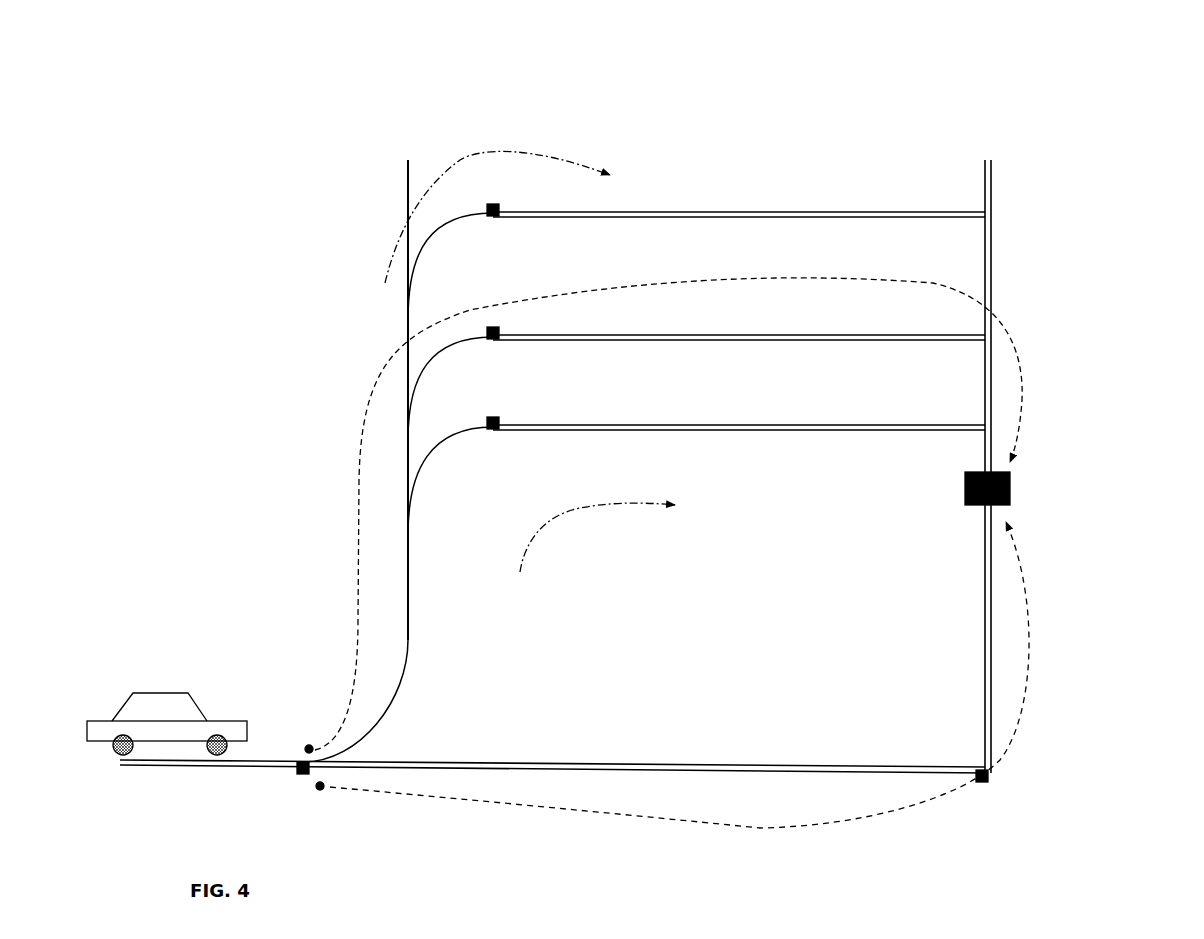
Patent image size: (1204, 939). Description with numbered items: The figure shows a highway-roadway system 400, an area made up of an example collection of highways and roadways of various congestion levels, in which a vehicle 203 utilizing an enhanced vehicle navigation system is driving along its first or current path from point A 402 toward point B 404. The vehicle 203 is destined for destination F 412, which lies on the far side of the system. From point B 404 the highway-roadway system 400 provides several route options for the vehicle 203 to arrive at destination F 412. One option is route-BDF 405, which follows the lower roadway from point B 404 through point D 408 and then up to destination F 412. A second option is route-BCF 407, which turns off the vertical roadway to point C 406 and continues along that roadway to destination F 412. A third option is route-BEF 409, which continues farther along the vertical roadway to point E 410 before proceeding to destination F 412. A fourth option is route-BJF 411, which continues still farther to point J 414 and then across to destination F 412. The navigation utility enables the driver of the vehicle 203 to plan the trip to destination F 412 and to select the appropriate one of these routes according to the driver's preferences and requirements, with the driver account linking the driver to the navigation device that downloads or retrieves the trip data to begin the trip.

The highway-roadway system 400 is at (595, 388).
The vehicle 203 is at (147, 677).
The location A 402 is at (149, 836).
The intersection B 404 is at (321, 846).
The route-BDF 405 is at (684, 830).
The intersection C 406 is at (509, 502).
The route-BCF 407 is at (628, 581).
The intersection D 408 is at (1011, 867).
The route-BEF 409 is at (1013, 316).
The intersection E 410 is at (508, 401).
The route-BJF 411 is at (548, 136).
The destination F 412 is at (1122, 524).
The intersection J 414 is at (511, 277).